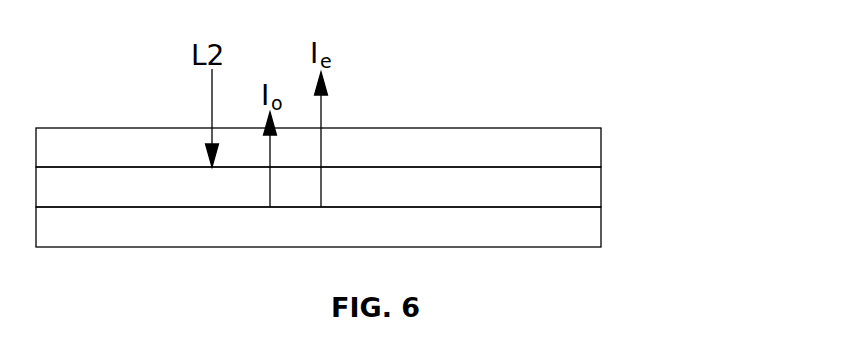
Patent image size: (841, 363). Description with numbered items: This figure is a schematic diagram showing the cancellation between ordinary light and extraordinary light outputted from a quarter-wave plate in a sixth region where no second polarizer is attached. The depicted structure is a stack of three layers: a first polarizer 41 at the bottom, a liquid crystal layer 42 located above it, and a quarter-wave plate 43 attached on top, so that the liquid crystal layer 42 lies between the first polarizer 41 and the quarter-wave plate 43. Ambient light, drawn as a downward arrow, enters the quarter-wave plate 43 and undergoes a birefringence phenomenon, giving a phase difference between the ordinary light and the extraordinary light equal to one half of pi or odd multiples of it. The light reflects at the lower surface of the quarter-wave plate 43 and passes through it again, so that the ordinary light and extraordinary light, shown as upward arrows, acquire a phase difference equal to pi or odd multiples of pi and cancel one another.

The first polarizer 41 is at (601, 226).
The liquid crystal layer 42 is at (601, 187).
The quarter-wave plate 43 is at (601, 147).